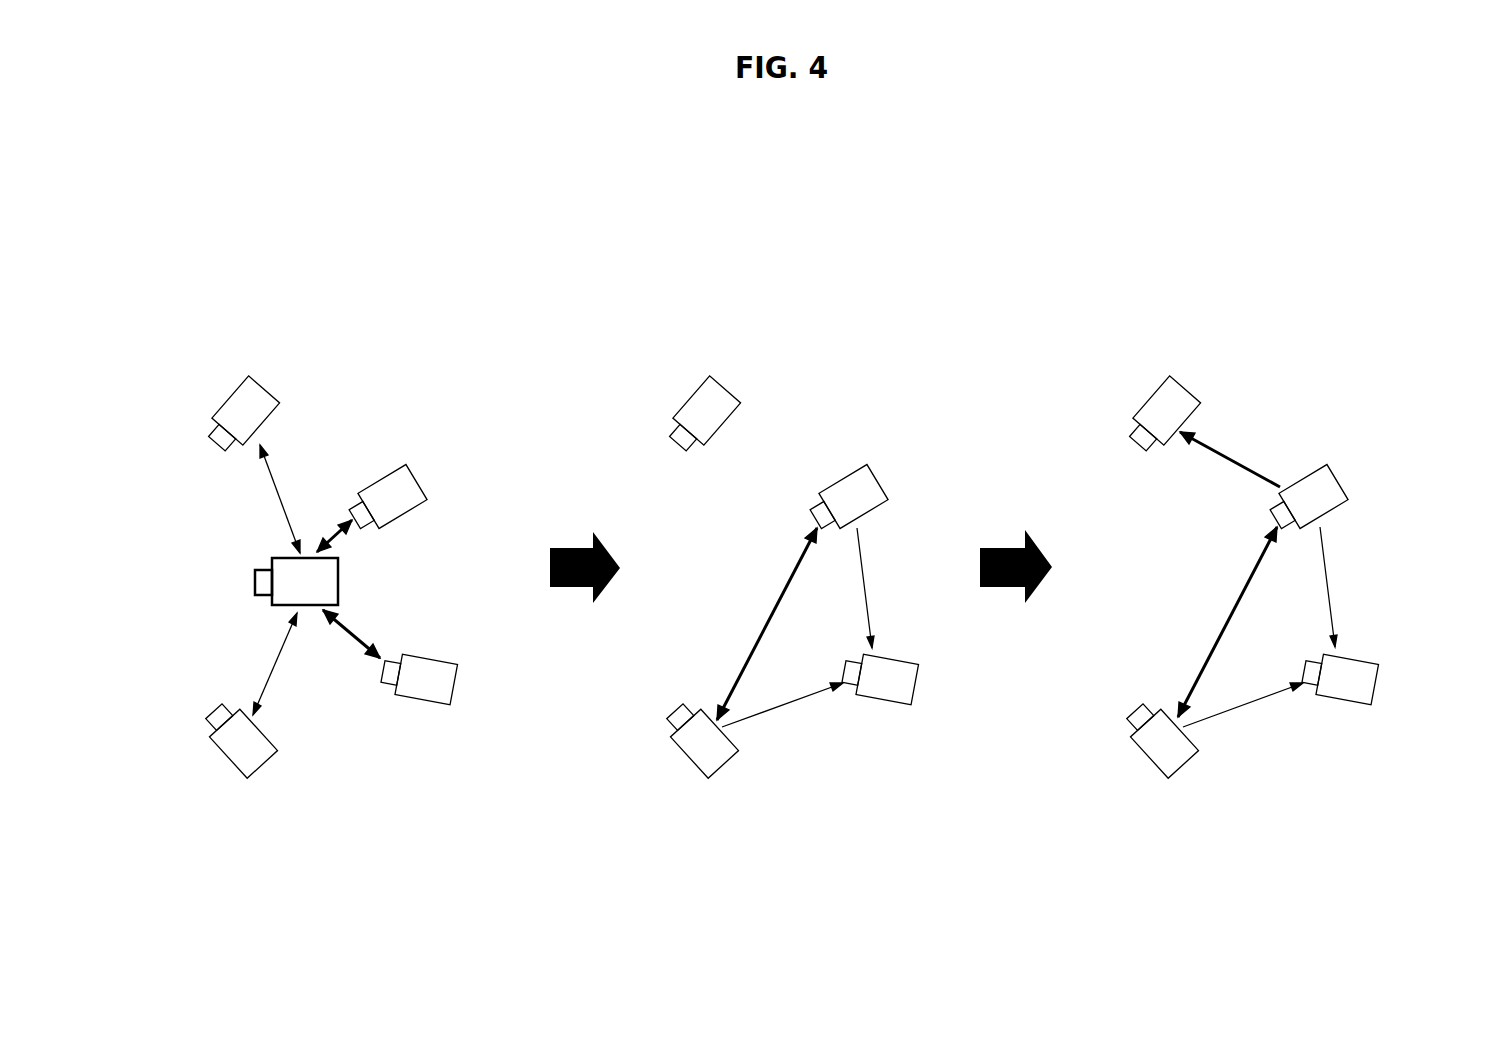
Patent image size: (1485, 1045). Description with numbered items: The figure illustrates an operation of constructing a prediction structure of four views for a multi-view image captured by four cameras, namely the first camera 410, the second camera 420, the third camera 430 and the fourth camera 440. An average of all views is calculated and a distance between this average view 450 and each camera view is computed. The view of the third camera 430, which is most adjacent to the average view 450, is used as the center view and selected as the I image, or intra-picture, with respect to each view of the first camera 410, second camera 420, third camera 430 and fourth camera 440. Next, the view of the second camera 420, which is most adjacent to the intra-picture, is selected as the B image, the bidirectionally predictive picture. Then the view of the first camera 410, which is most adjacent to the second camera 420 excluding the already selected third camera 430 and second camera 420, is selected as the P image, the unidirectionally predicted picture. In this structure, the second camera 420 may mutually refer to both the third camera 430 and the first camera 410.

The camera T1 410 is at (213, 715).
The camera T2 420 is at (457, 682).
The camera T3 430 is at (418, 473).
The camera T4 440 is at (263, 387).
The average view Tm 450 is at (338, 582).